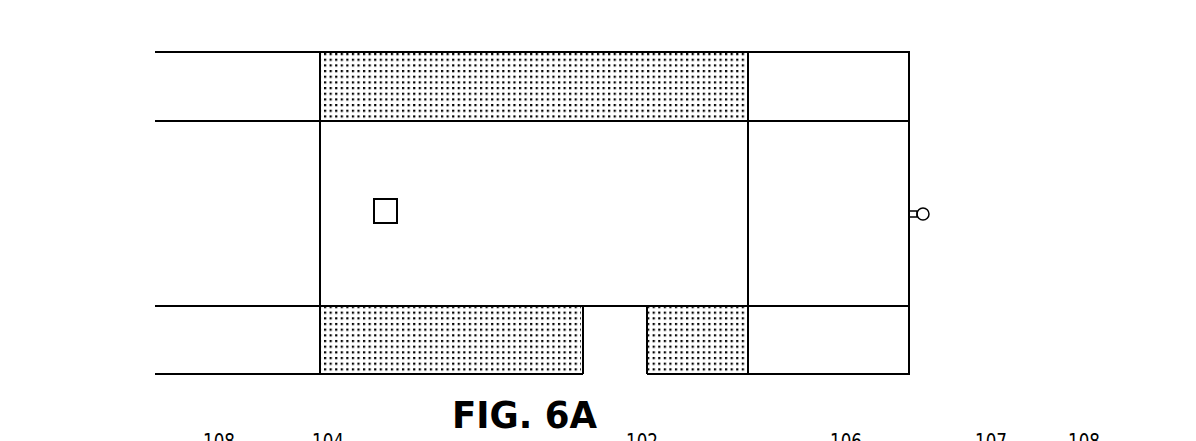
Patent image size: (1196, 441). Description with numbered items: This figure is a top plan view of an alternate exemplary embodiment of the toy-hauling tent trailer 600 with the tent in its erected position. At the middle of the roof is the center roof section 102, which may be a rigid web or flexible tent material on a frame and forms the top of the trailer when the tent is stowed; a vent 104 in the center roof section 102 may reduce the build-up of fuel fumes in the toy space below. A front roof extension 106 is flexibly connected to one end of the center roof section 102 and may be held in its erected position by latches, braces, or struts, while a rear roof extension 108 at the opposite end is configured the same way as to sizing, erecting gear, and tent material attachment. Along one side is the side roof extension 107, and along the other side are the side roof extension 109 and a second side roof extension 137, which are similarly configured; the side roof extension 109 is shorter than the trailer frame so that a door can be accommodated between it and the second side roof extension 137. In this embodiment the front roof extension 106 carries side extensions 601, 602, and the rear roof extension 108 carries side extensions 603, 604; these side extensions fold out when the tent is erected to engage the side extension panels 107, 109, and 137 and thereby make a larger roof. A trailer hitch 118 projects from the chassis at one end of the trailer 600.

The toy-hauling tent trailer 600 is at (1072, 141).
The center roof section 102 is at (537, 220).
The vent 104 is at (390, 198).
The front roof extension 106 is at (910, 182).
The side roof extension 107 is at (722, 52).
The rear roof extension 108 is at (155, 208).
The side roof extension 109 is at (346, 376).
The trailer hitch 118 is at (935, 217).
The second side roof extension 137 is at (748, 359).
The side extension 601 is at (908, 341).
The side extension 602 is at (908, 82).
The side extension 603 is at (155, 88).
The side extension 604 is at (155, 345).